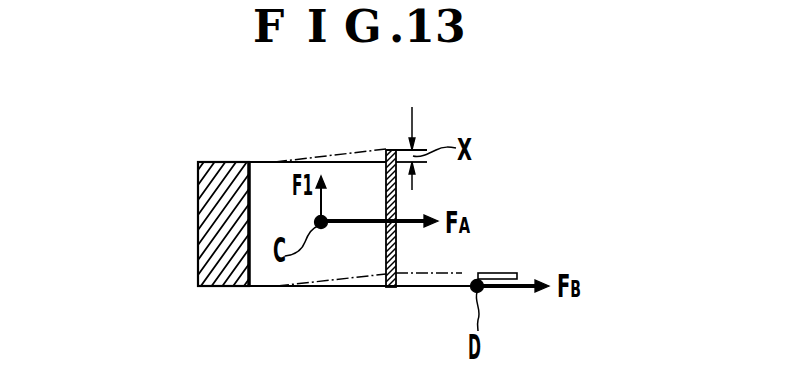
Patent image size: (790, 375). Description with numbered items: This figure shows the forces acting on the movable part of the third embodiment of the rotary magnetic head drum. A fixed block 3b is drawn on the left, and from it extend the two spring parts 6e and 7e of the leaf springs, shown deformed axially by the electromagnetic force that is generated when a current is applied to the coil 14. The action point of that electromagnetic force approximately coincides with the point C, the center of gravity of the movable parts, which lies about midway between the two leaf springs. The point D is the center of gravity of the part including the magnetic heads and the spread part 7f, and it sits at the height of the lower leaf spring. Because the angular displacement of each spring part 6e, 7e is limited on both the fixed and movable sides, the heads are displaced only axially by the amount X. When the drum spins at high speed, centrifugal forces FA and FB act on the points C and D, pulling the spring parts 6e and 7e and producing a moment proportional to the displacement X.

The fixed block / base portion 3b is at (206, 227).
The spring part 6e is at (338, 150).
The spring part 7e is at (343, 289).
The coil 14 is at (397, 207).
The spread part 7f is at (502, 290).